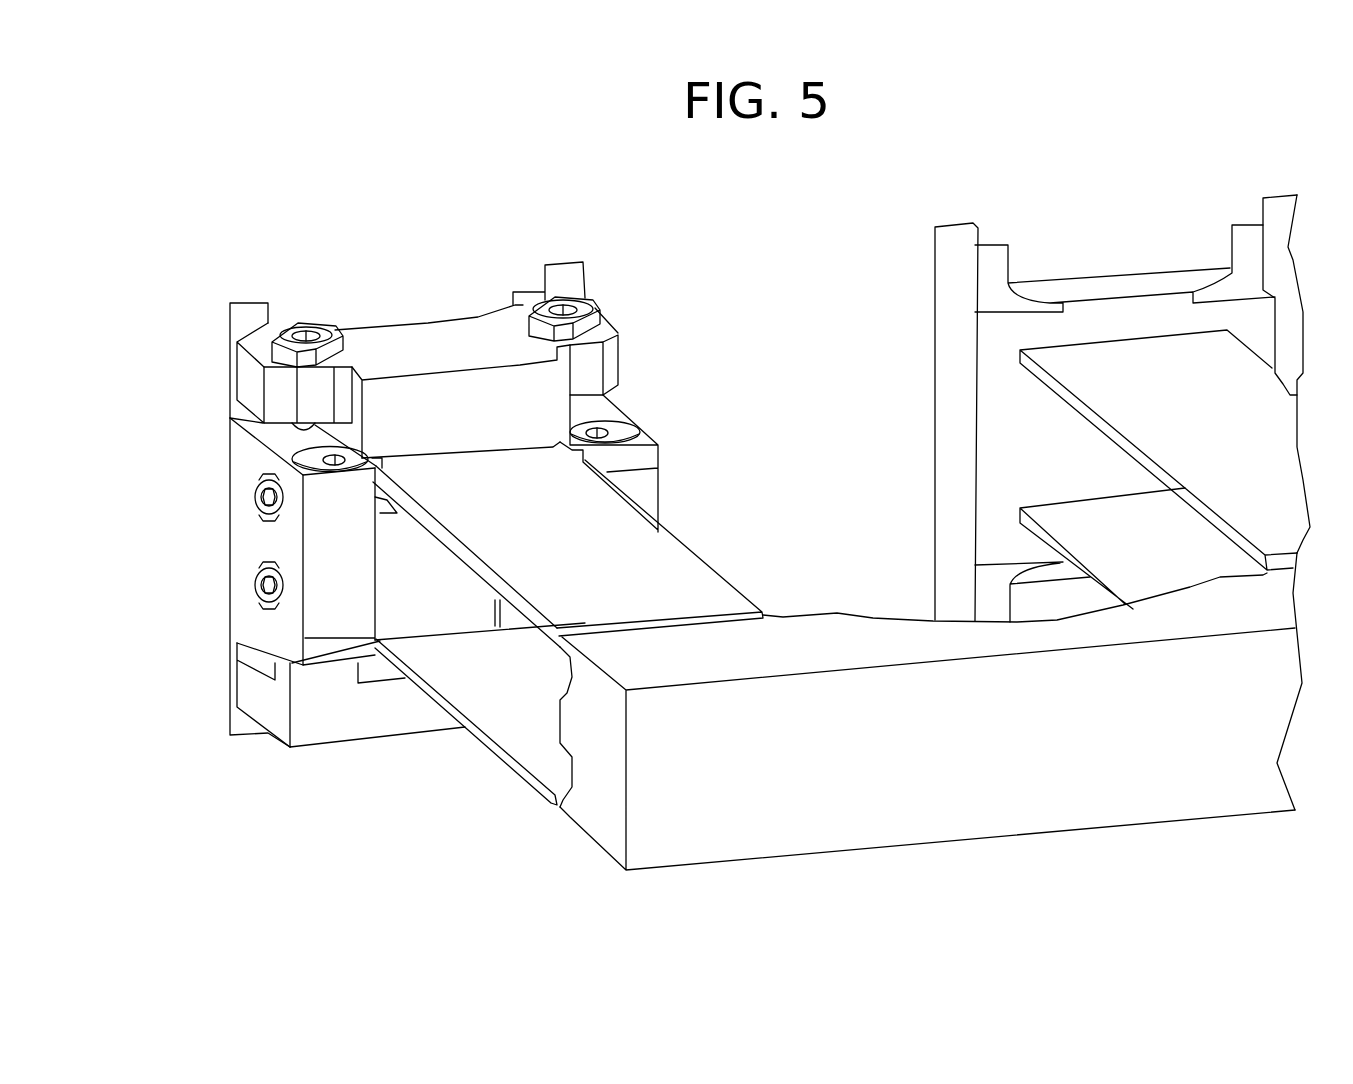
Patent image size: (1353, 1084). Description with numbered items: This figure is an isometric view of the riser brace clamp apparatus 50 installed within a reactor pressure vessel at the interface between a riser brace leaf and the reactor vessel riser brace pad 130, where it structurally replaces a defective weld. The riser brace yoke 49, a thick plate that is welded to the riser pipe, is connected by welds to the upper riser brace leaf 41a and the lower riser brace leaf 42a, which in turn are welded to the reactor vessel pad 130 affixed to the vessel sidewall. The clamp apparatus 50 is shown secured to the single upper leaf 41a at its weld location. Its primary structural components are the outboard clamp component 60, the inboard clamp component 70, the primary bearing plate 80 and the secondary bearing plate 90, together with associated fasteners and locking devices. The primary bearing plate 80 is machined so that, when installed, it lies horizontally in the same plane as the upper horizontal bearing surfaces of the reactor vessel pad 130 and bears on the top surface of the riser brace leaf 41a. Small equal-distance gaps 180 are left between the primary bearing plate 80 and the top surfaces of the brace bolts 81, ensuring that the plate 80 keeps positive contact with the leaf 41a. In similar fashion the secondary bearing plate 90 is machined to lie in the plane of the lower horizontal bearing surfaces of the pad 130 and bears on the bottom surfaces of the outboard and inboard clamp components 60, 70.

The reactor vessel riser brace pad 130 is at (250, 301).
The riser brace clamp apparatus 50 is at (645, 343).
The primary bearing plate 80 is at (421, 338).
The outboard clamp component 60 is at (243, 523).
The gap 180 is at (230, 418).
The inboard clamp component 70 is at (660, 452).
The brace bolt 81 is at (628, 430).
The upper riser brace leaf 41a is at (647, 547).
The lower riser brace leaf 42a is at (530, 733).
The secondary bearing plate 90 is at (316, 748).
The riser brace yoke 49 is at (775, 838).